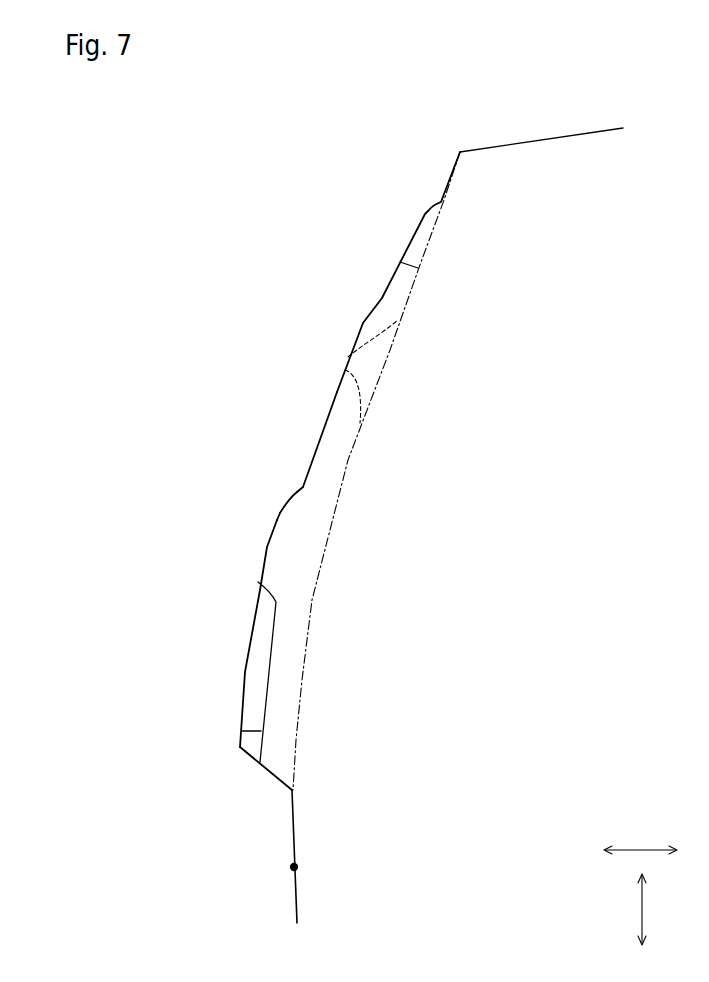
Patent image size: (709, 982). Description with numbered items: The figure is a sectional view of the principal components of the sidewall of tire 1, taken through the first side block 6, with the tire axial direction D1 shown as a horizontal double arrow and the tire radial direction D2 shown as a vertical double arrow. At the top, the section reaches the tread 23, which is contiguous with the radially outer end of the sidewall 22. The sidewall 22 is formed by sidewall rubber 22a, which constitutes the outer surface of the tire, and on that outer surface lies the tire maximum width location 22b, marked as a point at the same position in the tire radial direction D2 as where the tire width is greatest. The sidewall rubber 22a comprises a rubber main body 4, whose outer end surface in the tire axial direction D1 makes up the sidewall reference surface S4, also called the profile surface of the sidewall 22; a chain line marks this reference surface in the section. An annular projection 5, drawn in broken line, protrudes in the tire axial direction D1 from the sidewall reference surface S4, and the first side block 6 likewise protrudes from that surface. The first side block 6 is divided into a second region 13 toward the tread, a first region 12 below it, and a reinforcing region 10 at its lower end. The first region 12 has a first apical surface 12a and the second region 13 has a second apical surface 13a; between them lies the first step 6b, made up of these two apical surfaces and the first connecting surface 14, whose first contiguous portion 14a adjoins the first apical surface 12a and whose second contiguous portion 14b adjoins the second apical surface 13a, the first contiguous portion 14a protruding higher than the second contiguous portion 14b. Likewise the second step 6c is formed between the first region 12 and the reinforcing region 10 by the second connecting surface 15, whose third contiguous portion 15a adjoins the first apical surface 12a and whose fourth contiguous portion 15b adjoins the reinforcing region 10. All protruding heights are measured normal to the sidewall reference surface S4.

The tire 1 is at (145, 92).
The tread 23 is at (505, 127).
The sidewall 22 is at (205, 352).
The sidewall rubber 22a is at (297, 912).
The tire maximum width location 22b is at (278, 867).
The sidewall reference surface S4 is at (400, 262).
The second region 13 is at (385, 297).
The second apical surface 13a is at (363, 323).
The annular projection 5 is at (337, 392).
The first side block 6 is at (288, 388).
The first step 6b is at (252, 495).
The second step 6c is at (238, 657).
The first connecting surface 14 is at (290, 497).
The first contiguous portion 14a is at (277, 512).
The second contiguous portion 14b is at (298, 485).
The first region 12 is at (260, 565).
The first apical surface 12a is at (263, 545).
The reinforcing region 10 is at (270, 705).
The second connecting surface 15 is at (249, 745).
The third contiguous portion 15a is at (245, 668).
The fourth contiguous portion 15b is at (242, 731).
The rubber main body 4 is at (302, 840).
The tire axial direction D1 is at (640, 842).
The tire radial direction D2 is at (652, 909).